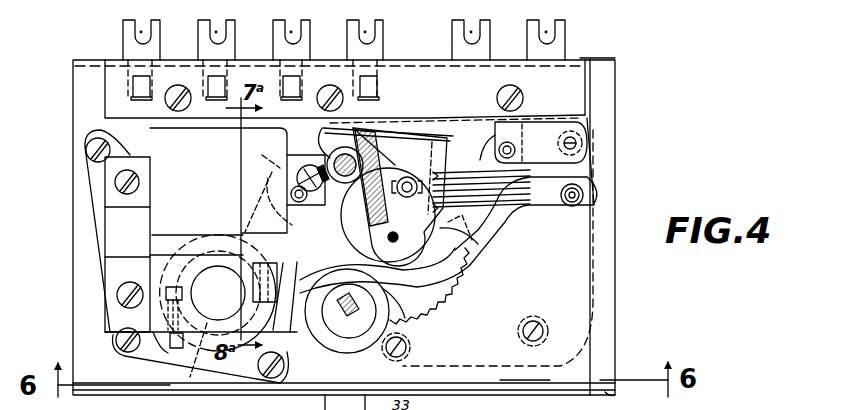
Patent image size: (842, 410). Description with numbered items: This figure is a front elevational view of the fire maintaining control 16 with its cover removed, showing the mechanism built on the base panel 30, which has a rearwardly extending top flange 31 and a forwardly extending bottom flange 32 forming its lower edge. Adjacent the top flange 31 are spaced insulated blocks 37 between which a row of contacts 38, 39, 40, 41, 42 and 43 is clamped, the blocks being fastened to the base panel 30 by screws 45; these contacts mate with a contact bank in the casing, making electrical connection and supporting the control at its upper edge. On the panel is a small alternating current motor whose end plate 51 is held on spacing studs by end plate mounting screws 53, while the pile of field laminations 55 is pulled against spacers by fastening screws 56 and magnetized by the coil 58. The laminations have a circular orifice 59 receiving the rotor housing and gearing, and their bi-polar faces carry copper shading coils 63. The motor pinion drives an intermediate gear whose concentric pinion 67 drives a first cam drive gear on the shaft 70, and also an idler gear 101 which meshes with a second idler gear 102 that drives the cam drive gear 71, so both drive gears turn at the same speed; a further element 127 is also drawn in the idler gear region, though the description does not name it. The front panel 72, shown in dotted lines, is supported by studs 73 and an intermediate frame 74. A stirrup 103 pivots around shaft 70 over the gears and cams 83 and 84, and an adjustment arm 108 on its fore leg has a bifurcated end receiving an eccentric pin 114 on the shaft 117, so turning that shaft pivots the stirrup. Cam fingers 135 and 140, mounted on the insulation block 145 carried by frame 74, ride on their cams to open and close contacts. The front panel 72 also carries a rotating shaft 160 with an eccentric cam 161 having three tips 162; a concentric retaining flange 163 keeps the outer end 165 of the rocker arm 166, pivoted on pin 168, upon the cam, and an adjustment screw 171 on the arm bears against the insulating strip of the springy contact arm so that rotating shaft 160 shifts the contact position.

The housing assembly 16 is at (616, 165).
The base panel 30 is at (610, 212).
The top flange 31 is at (605, 56).
The bottom flange 32 is at (612, 394).
The insulated blocks 37 is at (568, 70).
The contact 38 is at (157, 35).
The contact 39 is at (236, 29).
The contact 40 is at (307, 27).
The contact 41 is at (382, 27).
The contact 42 is at (487, 26).
The contact 43 is at (564, 28).
The screws 45 is at (192, 84).
The end plate 51 is at (94, 181).
The end plate mounting screws 53 is at (88, 151).
The field laminations 55 is at (108, 235).
The fastening screws 56 is at (118, 186).
The coil 58 is at (162, 141).
The circular orifice 59 is at (201, 312).
The shading coils 63 is at (243, 236).
The concentric pinion 67 is at (265, 291).
The shaft 70 is at (400, 240).
The cam drive gear 71 is at (455, 297).
The front panel 72 is at (596, 300).
The studs 73 is at (412, 348).
The intermediate frame 74 is at (587, 112).
The cam 83 is at (445, 252).
The cam 84 is at (440, 270).
The idler gear 101 is at (290, 196).
The second idler gear 102 is at (300, 169).
The stirrup 103 is at (412, 135).
The adjustment arm 108 is at (365, 145).
The eccentric pin 114 is at (345, 126).
The shaft 117 is at (322, 129).
The arm 127 is at (268, 193).
The cam finger 135 is at (475, 185).
The cam finger 140 is at (462, 173).
The insulation block 145 is at (578, 160).
The rotating shaft 160 is at (351, 318).
The eccentrically mounted cam 161 is at (343, 336).
The tips 162 is at (405, 321).
The retaining flange 163 is at (327, 340).
The outer end of rocker arm 165 is at (283, 305).
The rocker arm 166 is at (503, 221).
The pin 168 is at (572, 206).
The adjustment screw 171 is at (470, 240).